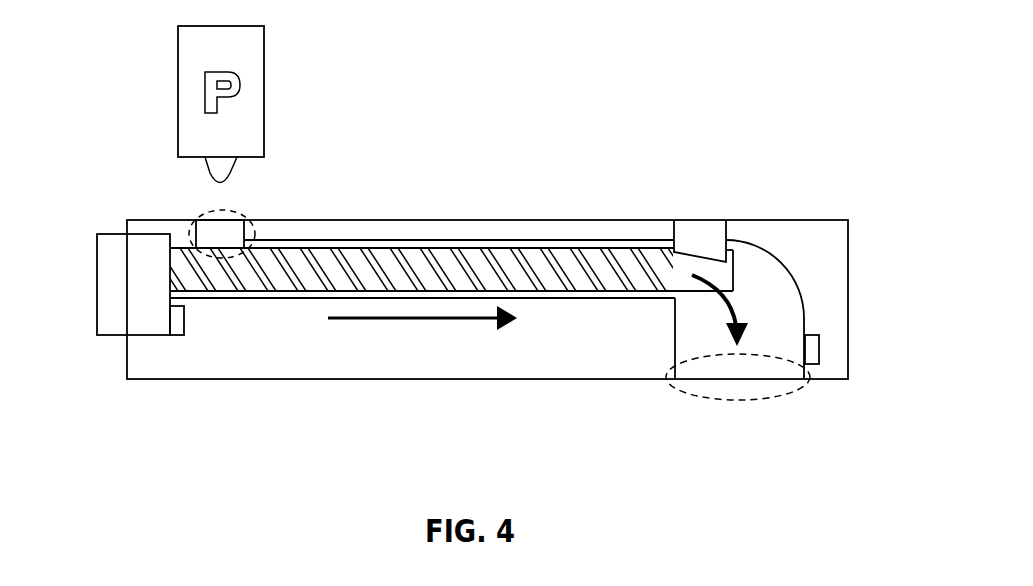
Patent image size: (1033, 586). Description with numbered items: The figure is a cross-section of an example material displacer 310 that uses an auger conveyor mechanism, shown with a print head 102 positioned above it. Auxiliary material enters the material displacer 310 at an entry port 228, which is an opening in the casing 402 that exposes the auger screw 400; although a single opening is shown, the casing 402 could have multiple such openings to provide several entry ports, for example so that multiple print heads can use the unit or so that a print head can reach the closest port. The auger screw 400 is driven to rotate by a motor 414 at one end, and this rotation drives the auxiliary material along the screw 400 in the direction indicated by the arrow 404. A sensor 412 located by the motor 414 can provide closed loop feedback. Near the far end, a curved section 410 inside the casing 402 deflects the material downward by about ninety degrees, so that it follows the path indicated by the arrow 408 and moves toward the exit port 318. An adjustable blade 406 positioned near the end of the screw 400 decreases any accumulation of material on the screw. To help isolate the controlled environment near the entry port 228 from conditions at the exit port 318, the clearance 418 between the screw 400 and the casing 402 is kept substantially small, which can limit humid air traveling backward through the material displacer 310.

The print head 102 is at (145, 99).
The entry port 228 is at (205, 213).
The material displacer 310 is at (519, 104).
The exit port 318 is at (762, 398).
The auger screw 400 is at (433, 258).
The casing 402 is at (266, 366).
The arrow 404 is at (412, 320).
The adjustable blade 406 is at (708, 225).
The arrow 408 is at (737, 302).
The curved section 410 is at (792, 275).
The sensor 412 is at (183, 327).
The motor 414 is at (115, 282).
The clearance 418 is at (565, 242).